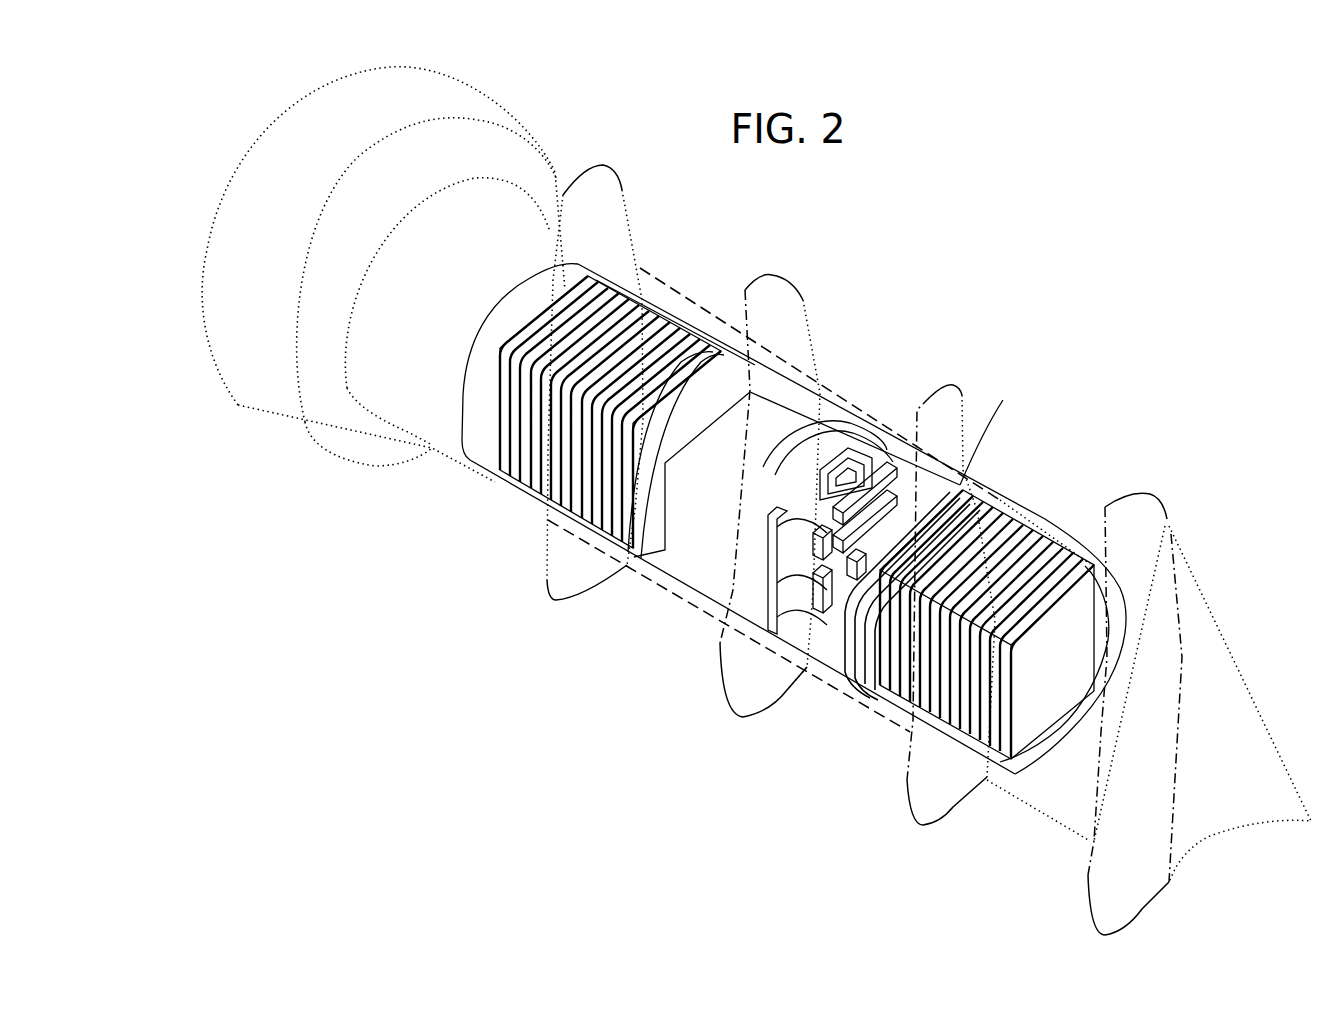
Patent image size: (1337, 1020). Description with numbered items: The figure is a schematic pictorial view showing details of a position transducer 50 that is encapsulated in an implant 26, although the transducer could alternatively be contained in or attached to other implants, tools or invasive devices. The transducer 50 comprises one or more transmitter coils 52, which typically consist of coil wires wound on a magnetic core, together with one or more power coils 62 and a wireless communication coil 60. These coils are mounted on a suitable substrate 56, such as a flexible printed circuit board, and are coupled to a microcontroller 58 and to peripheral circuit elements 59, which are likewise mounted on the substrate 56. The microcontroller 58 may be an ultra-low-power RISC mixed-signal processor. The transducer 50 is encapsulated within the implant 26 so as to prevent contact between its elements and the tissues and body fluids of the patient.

The implant 26 is at (277, 383).
The position transducer 50 is at (502, 318).
The transmitter coils 52 is at (663, 307).
The substrate 56 is at (750, 367).
The microcontroller 58 is at (817, 398).
The peripheral circuit elements 59 is at (813, 590).
The wireless communication coil 60 is at (927, 490).
The power coils 62 is at (1023, 515).